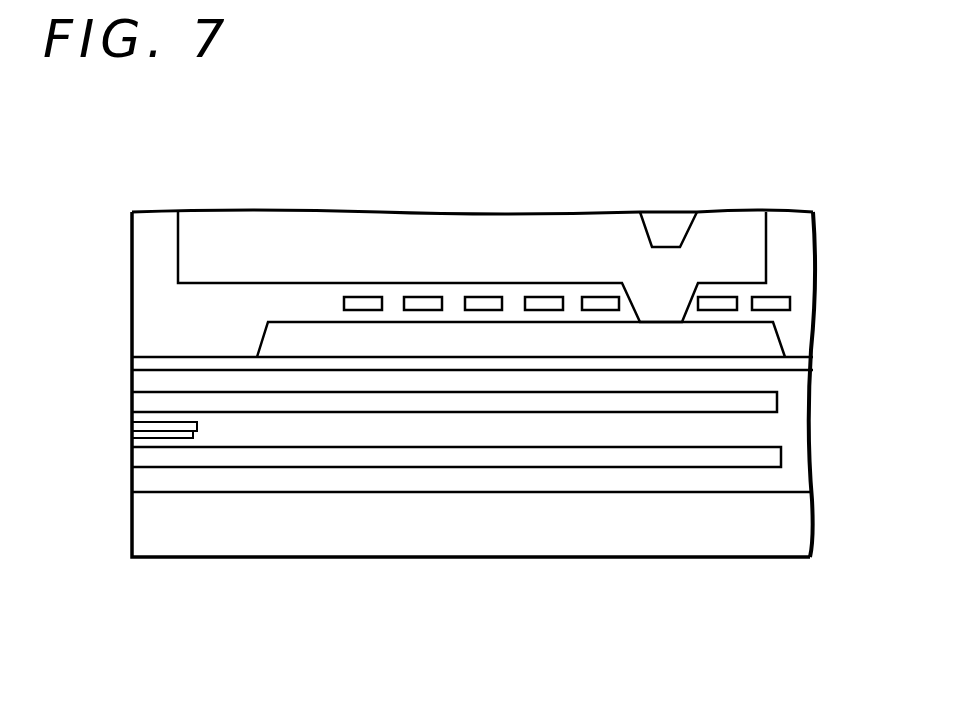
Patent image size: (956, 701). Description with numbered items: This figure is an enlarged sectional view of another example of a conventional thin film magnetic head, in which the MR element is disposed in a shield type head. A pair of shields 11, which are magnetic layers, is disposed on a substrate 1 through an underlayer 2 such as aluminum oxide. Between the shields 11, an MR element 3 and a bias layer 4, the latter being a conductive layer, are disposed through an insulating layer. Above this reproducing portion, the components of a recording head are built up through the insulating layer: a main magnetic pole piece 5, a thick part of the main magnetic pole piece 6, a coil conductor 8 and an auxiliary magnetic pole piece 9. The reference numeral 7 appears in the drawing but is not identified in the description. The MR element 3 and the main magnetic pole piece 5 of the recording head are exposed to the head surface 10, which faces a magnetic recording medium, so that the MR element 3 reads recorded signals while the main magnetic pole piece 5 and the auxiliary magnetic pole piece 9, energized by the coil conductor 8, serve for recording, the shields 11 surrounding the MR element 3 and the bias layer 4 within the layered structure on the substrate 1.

The substrate 1 is at (290, 540).
The underlayer 2 is at (517, 475).
The MR element 3 is at (138, 436).
The bias layer 4 is at (165, 430).
The main magnetic pole piece 5 is at (168, 364).
The thick part of the main magnetic pole piece 6 is at (640, 228).
The upper layer 7 is at (222, 303).
The coil conductor 8 is at (372, 297).
The auxiliary magnetic pole piece 9 is at (741, 333).
The head surface 10 is at (132, 528).
The shields 11 is at (832, 428).